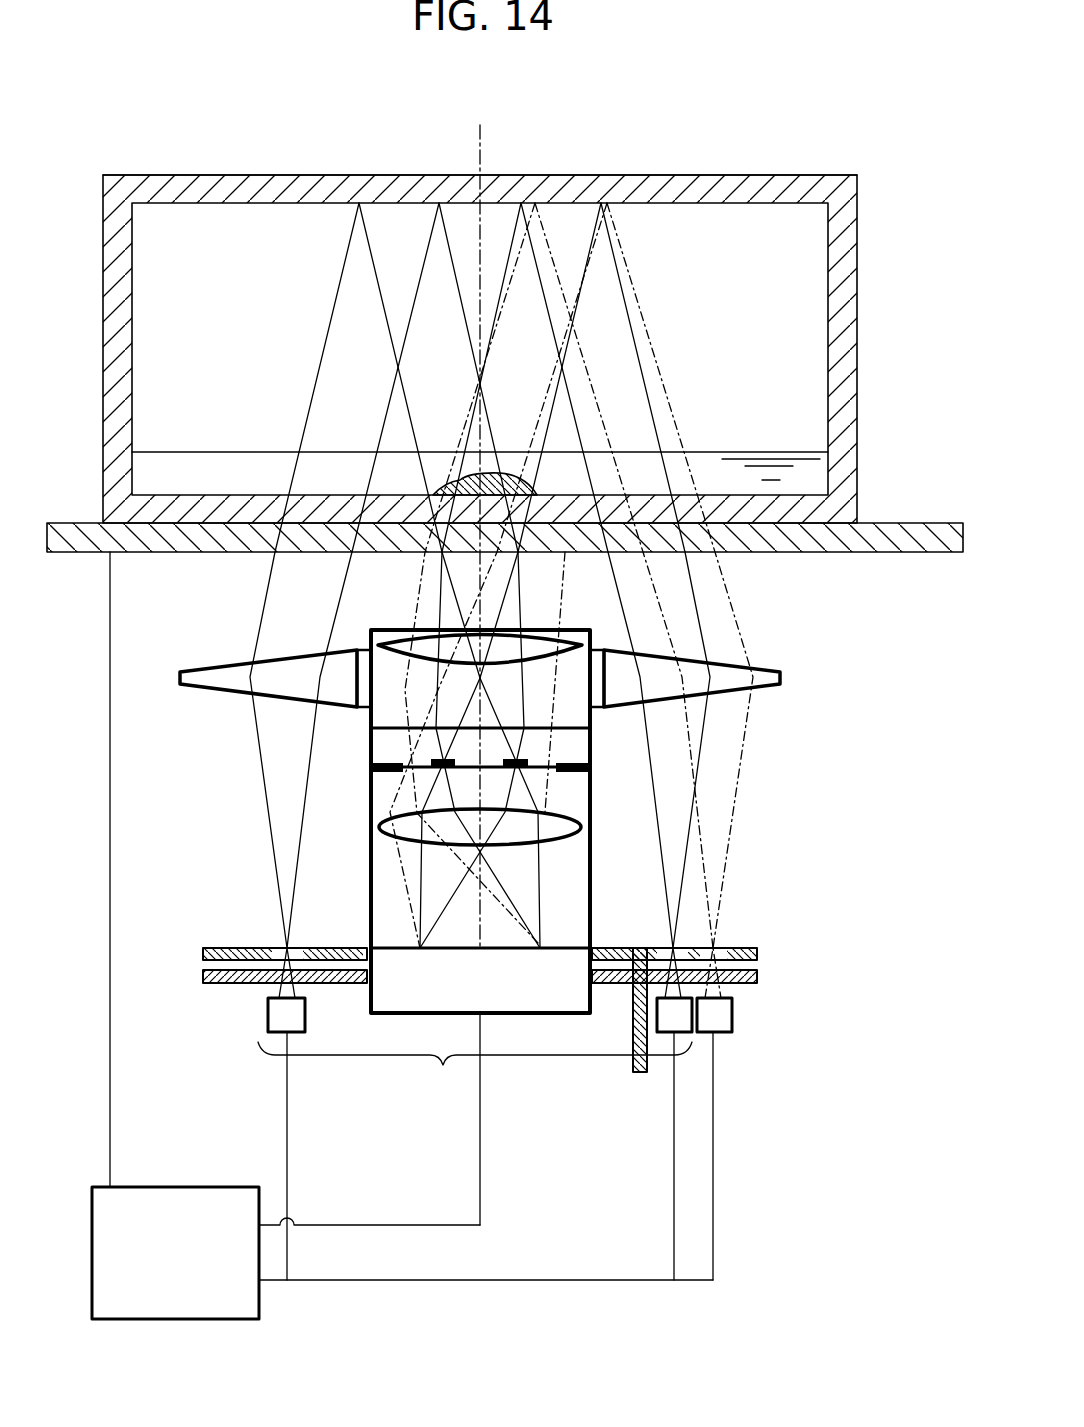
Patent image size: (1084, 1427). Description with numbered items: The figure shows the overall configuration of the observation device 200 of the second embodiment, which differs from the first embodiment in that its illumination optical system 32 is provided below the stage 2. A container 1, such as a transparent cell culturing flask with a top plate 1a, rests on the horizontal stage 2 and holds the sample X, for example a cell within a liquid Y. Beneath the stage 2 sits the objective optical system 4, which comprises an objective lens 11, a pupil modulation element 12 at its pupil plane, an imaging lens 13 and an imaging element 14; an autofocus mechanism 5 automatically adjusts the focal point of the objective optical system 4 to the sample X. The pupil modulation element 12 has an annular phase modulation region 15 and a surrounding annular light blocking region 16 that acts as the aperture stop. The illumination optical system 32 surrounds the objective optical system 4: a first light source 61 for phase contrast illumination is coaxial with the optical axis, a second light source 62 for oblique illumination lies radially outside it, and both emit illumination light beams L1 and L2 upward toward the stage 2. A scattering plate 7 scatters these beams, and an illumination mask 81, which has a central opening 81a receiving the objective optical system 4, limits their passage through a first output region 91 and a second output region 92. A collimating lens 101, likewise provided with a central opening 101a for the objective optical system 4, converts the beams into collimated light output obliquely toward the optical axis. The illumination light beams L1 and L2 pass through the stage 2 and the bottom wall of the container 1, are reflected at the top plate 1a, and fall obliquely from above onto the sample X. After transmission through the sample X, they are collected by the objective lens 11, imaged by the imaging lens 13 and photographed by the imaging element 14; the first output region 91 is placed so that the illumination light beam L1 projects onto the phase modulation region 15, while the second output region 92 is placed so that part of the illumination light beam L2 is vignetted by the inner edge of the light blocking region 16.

The observation device 200 is at (148, 150).
The container 1 is at (858, 268).
The top plate 1a is at (682, 174).
The stage 2 is at (900, 523).
The sample X is at (500, 473).
The liquid Y is at (758, 452).
The objective optical system 4 is at (369, 893).
The objective lens 11 is at (560, 633).
The pupil modulation element 12 is at (387, 755).
The imaging lens 13 is at (379, 826).
The phase modulation region 15 is at (528, 758).
The light blocking region 16 is at (575, 772).
The collimating lens 101 is at (782, 678).
The opening 101a is at (363, 650).
The illumination mask 81 is at (757, 953).
The opening 81a is at (597, 948).
The scattering plate 7 is at (757, 976).
The first output region 91 is at (670, 948).
The second output region 92 is at (718, 948).
The imaging element 14 is at (369, 1000).
The second light source 62 is at (732, 1030).
The first light source 61 is at (475, 1070).
The illumination optical system 32 is at (778, 1027).
The autofocus mechanism 5 is at (180, 1187).
The illumination light beam L1 is at (705, 744).
The illumination light beam L2 is at (735, 790).